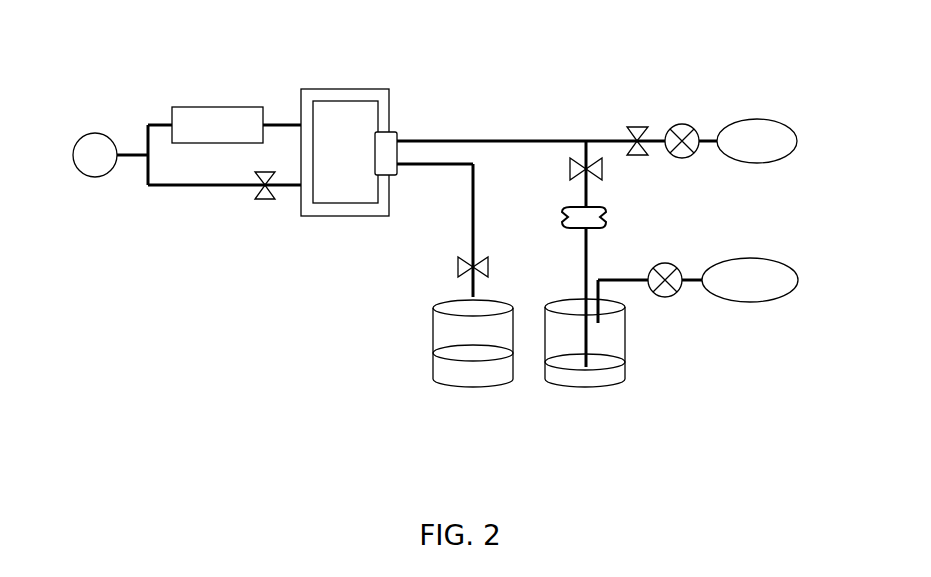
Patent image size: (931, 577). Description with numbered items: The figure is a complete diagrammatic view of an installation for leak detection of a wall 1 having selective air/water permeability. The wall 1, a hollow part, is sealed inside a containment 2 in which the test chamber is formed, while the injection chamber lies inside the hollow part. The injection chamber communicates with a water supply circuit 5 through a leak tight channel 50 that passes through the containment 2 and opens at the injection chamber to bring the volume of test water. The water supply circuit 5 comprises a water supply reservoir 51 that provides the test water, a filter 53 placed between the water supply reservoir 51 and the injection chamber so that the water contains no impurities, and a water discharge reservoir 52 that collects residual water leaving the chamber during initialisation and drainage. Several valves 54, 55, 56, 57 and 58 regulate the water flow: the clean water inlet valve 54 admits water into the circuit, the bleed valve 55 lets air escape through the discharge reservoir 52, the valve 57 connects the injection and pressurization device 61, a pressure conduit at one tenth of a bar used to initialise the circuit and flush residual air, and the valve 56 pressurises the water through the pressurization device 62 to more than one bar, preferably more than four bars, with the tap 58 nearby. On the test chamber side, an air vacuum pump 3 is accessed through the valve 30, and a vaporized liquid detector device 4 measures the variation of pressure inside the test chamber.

The wall 1 is at (351, 104).
The containment 2 is at (348, 210).
The air vacuum pump 3 is at (98, 163).
The vaporized liquid detector device 4 is at (213, 117).
The water supply circuit 5 is at (518, 127).
The access valve 30 is at (270, 202).
The leak tight channel 50 is at (385, 145).
The water supply reservoir 51 is at (587, 380).
The water discharge reservoir 52 is at (470, 378).
The filter 53 is at (608, 215).
The clean water inlet valve 54 is at (598, 168).
The bleed valve 55 is at (458, 263).
The pressurization valve 56 is at (638, 128).
The valve 57 is at (663, 290).
The tap 58 is at (685, 130).
The injection and pressurization device 61 is at (748, 297).
The pressurization device 62 is at (783, 135).